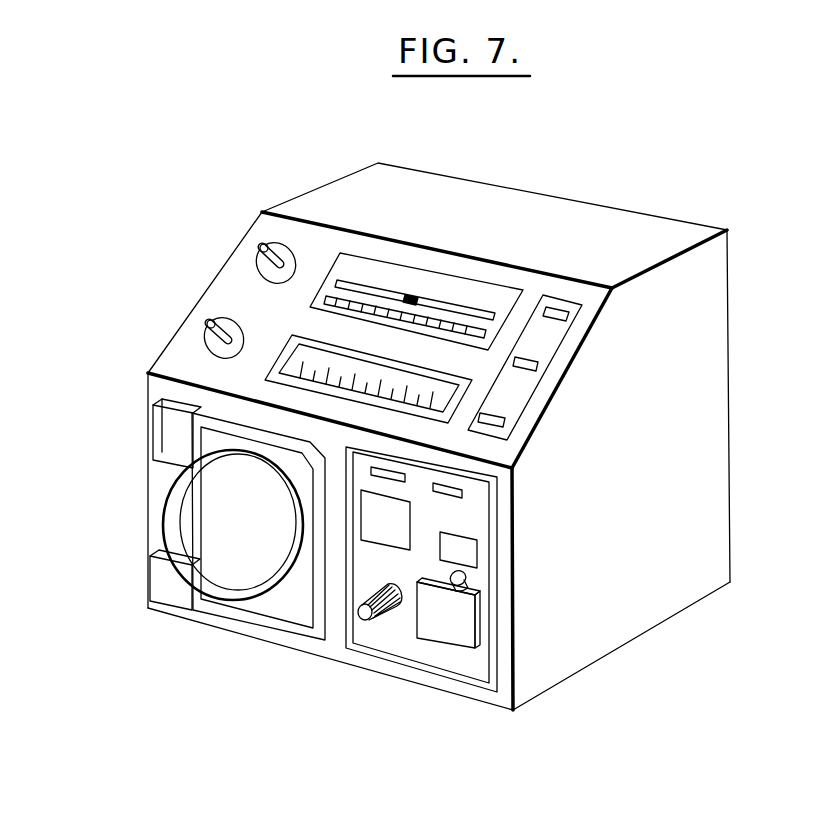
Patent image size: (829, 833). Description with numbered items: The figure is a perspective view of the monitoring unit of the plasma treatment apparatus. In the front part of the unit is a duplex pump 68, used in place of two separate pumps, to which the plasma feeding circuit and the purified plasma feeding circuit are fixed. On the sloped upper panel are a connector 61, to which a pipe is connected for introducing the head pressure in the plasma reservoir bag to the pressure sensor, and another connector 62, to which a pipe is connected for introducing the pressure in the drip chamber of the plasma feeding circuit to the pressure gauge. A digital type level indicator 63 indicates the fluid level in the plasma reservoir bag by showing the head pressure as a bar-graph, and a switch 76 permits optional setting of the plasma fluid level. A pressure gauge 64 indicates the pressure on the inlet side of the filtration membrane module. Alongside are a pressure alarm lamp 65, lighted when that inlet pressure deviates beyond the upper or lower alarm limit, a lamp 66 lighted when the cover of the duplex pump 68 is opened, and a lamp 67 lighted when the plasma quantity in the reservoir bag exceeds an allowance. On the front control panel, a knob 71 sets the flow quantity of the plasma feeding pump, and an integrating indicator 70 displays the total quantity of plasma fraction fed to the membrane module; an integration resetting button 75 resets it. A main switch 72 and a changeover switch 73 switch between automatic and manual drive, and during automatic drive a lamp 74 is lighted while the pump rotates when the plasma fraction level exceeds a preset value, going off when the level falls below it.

The connector 61 is at (208, 335).
The connector 62 is at (263, 260).
The digital type level indicator 63 is at (429, 279).
The pressure gauge 64 is at (290, 346).
The pressure alarm lamp 65 is at (567, 315).
The lamp 66 is at (538, 367).
The lamp 67 is at (505, 422).
The duplex pump 68 is at (205, 512).
The integrating indicator 70 is at (468, 552).
The knob 71 is at (381, 621).
The main switch 72 is at (455, 648).
The changeover switch 73 is at (405, 474).
The lamp 74 is at (462, 494).
The integration resetting button 75 is at (468, 582).
The switch 76 is at (460, 324).